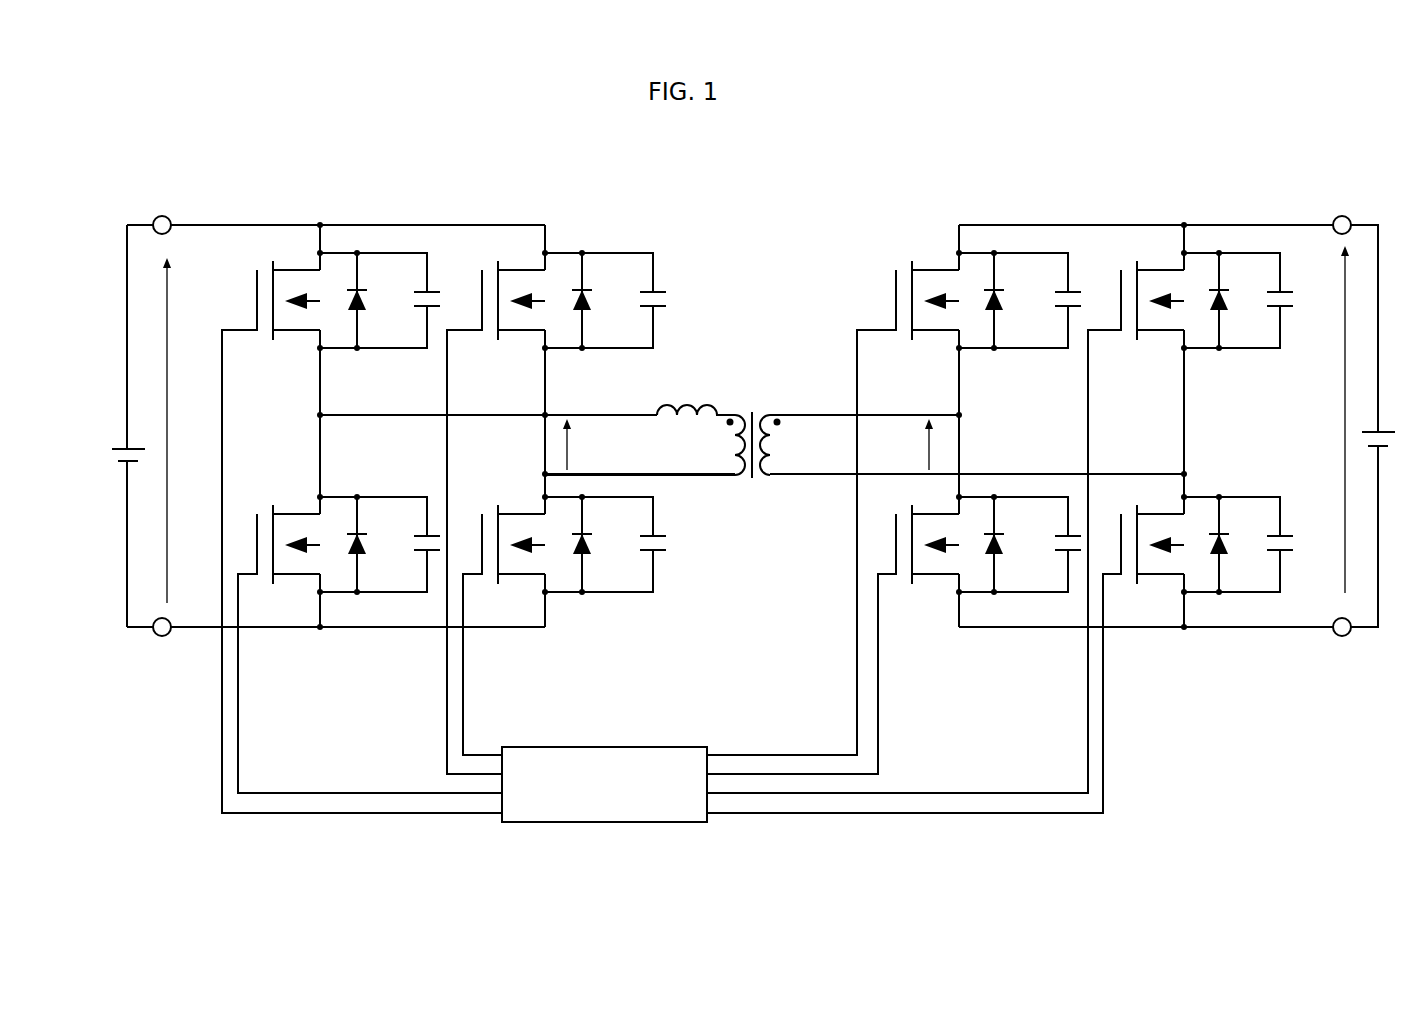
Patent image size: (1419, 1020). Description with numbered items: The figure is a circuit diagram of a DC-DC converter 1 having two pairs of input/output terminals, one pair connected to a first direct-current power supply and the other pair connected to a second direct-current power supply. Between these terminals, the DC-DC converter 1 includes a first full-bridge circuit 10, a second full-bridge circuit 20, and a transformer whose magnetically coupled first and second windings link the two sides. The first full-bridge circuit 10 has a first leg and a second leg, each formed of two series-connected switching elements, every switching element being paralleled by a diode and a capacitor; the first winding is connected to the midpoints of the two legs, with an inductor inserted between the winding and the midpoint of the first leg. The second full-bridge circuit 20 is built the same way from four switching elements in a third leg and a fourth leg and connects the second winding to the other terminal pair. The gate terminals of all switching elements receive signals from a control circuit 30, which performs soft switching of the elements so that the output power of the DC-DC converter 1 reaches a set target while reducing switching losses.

The DC-DC converter 1 is at (168, 108).
The first full-bridge circuit 10 is at (358, 188).
The second full-bridge circuit 20 is at (1206, 186).
The control circuit 30 is at (697, 747).